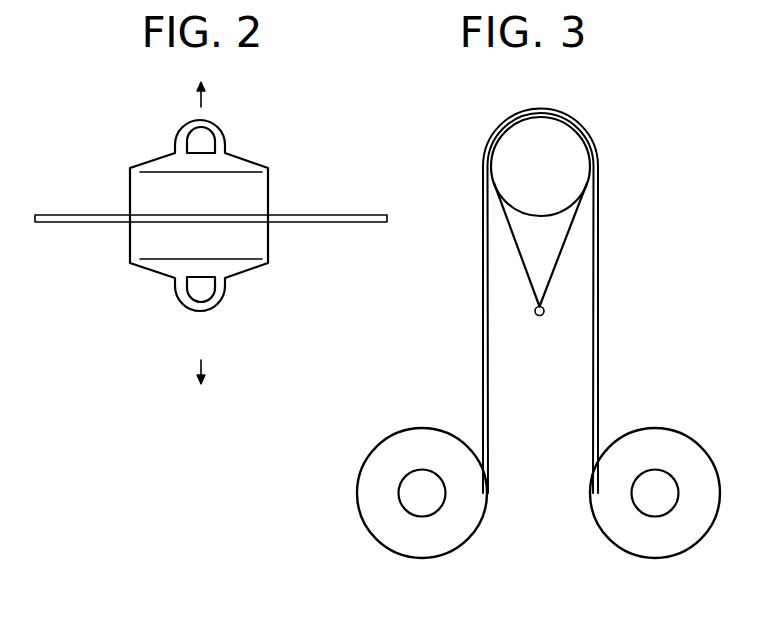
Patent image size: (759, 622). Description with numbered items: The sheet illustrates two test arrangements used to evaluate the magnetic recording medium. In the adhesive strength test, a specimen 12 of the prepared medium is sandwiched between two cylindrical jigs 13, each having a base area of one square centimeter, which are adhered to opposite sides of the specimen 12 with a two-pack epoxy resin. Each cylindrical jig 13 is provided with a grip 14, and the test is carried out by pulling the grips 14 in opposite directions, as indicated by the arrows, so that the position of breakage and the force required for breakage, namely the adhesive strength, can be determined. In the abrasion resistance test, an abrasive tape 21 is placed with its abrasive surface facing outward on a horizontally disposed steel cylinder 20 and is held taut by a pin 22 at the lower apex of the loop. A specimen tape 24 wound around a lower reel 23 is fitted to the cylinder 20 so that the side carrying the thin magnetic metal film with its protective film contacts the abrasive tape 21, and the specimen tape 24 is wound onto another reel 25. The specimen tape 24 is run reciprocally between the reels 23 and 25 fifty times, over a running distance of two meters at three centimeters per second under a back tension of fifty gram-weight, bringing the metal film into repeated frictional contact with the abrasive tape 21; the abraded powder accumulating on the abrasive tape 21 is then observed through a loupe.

In FIG. 2, the specimen 12 is at (68, 212).
In FIG. 2, the cylindrical jig 13 is at (270, 165).
In FIG. 2, the grip 14 is at (223, 132).
In FIG. 3, the steel cylinder 20 is at (575, 180).
In FIG. 3, the abrasive tape 21 is at (562, 253).
In FIG. 3, the pin 22 is at (542, 317).
In FIG. 3, the lower reel 23 is at (465, 523).
In FIG. 3, the specimen tape 24 is at (483, 371).
In FIG. 3, the reel 25 is at (617, 535).